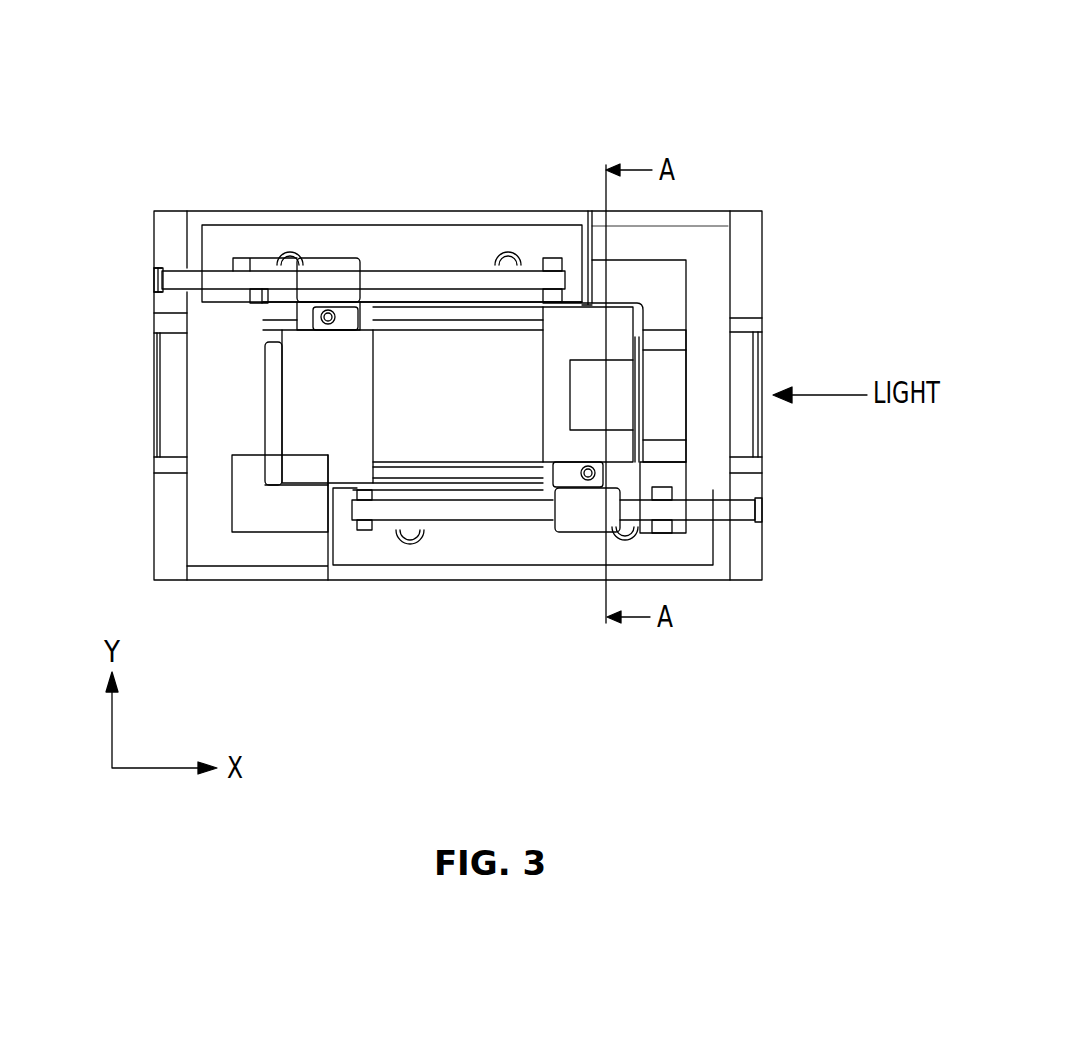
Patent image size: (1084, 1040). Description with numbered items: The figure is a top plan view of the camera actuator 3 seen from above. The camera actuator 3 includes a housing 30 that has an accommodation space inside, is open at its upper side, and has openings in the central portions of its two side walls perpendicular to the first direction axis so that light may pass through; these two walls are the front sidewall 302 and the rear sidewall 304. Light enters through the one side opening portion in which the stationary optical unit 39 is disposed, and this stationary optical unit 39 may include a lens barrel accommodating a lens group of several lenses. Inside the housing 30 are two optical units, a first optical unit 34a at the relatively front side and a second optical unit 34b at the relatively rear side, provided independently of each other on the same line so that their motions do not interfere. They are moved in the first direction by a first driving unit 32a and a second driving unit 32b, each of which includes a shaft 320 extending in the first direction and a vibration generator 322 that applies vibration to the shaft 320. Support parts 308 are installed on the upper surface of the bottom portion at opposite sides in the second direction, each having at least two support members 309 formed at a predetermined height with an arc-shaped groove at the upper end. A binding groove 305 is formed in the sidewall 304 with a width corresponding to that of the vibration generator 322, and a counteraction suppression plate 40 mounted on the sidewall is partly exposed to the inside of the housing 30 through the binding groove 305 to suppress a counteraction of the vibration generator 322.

The camera actuator 3 is at (453, 53).
The housing 30 is at (220, 555).
The front sidewall 302 is at (743, 262).
The rear sidewall 304 is at (170, 536).
The binding groove 305 is at (155, 278).
The support part 308 is at (412, 240).
The support member 309 is at (552, 258).
The first driving unit 32a is at (685, 677).
The second driving unit 32b is at (205, 137).
The shaft 320 is at (273, 278).
The vibration generator 322 is at (218, 278).
The first optical unit 34a is at (565, 445).
The second optical unit 34b is at (305, 467).
The stationary optical unit 39 is at (667, 338).
The counteraction suppression plate 40 is at (150, 284).